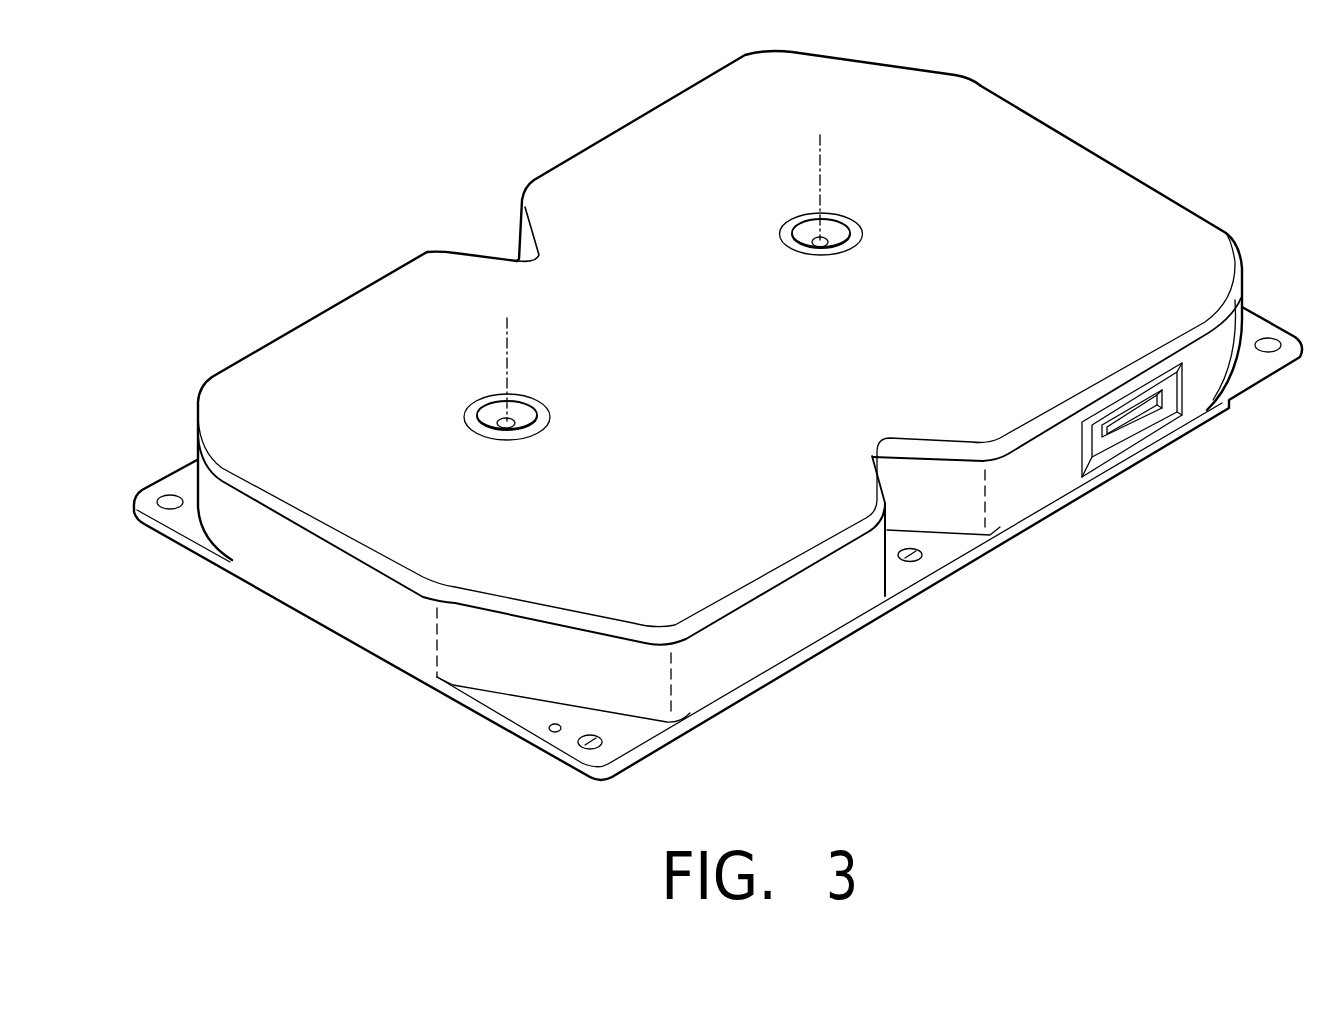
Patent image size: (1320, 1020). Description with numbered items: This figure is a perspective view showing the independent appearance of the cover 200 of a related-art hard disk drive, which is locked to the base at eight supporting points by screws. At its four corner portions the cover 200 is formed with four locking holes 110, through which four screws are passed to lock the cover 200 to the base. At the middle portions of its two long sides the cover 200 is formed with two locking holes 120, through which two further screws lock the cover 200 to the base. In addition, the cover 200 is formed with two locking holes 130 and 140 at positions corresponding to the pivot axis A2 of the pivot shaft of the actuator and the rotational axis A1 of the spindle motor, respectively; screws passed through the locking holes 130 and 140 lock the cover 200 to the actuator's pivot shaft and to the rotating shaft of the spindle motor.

The cover 200 is at (1112, 200).
The locking holes 120 is at (925, 548).
The locking holes 110 is at (1266, 342).
The locking hole 130 is at (505, 421).
The locking hole 140 is at (818, 241).
The rotational axis A1 is at (822, 158).
The pivot axis A2 is at (512, 345).